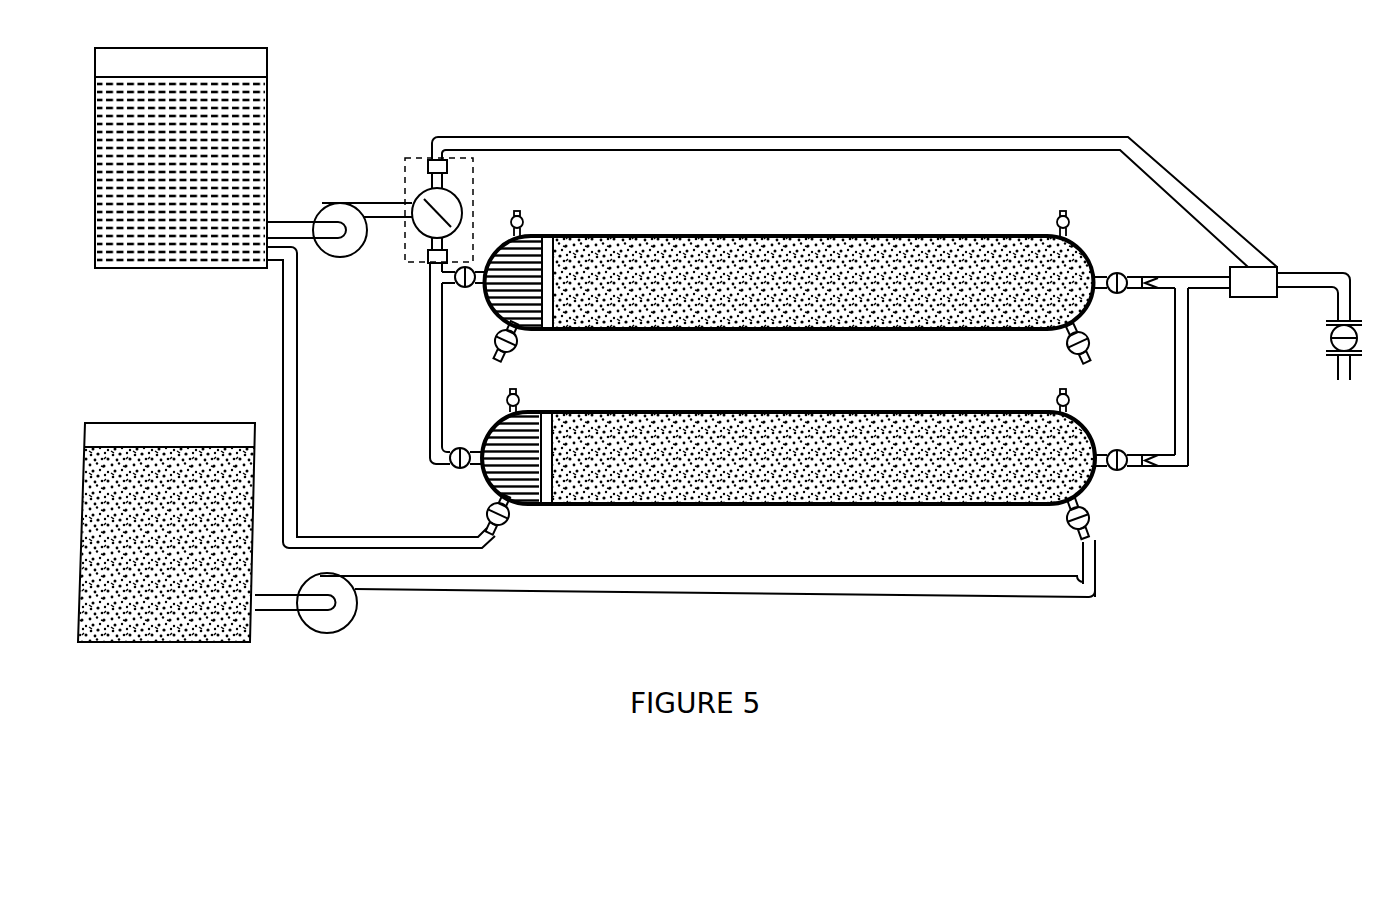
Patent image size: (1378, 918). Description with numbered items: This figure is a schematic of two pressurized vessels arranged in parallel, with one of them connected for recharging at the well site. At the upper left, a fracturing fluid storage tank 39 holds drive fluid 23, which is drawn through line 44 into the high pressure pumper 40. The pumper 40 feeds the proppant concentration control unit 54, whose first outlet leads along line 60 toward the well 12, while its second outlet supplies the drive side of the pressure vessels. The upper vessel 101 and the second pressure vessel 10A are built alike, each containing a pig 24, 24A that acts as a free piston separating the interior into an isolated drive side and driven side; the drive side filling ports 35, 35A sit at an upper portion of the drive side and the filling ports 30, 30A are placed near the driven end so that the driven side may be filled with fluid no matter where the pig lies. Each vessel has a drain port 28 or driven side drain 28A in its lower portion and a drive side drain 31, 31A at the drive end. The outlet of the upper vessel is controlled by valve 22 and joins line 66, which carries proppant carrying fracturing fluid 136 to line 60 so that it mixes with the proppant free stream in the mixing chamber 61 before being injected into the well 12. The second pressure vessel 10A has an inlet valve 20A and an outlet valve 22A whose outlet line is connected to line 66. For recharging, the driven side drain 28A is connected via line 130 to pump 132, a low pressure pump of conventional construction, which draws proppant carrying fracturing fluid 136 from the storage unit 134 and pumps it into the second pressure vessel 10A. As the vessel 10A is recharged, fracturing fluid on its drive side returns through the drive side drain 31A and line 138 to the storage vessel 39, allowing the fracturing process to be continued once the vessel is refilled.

The drive fluid 23 is at (268, 82).
The fracturing fluid storage tank 39 is at (183, 268).
The line 44 is at (284, 222).
The high pressure pumper 40 is at (340, 203).
The proppant concentration control unit 54 is at (411, 157).
The line 60 is at (545, 137).
The drive side filling port 35 is at (516, 214).
The filling port 30 is at (1068, 228).
The pig 24 is at (553, 237).
The adsorption vessel 101 is at (651, 232).
The proppant carrying fracturing fluid 136 is at (788, 237).
The valve 22 is at (456, 288).
The mixing chamber 61 is at (1258, 266).
The line 66 is at (1172, 294).
The well 12 is at (1331, 341).
The drain port 28 is at (1068, 334).
The drive side drain 31 is at (513, 330).
The drive side filling port 35A is at (509, 396).
The filling port 30A is at (1068, 402).
The pig 24A is at (550, 412).
The second pressure vessel 10A is at (653, 401).
The valve 22A is at (1118, 450).
The valve 20A is at (455, 468).
The driven side drain 28A is at (1090, 511).
The drive side drain 31A is at (512, 523).
The line 138 is at (298, 383).
The storage unit 134 is at (248, 643).
The pump 132 is at (352, 626).
The line 130 is at (682, 580).